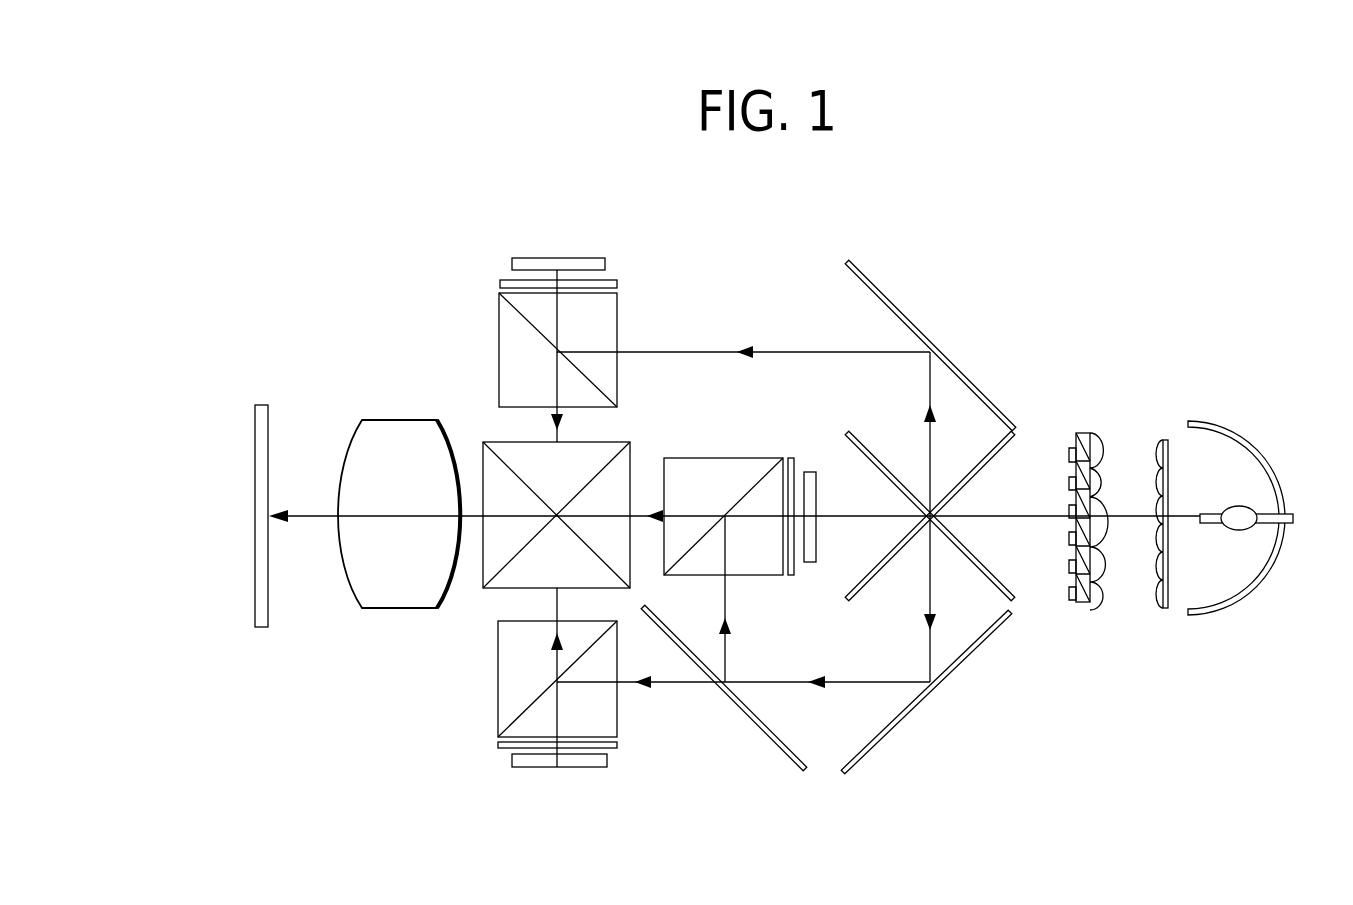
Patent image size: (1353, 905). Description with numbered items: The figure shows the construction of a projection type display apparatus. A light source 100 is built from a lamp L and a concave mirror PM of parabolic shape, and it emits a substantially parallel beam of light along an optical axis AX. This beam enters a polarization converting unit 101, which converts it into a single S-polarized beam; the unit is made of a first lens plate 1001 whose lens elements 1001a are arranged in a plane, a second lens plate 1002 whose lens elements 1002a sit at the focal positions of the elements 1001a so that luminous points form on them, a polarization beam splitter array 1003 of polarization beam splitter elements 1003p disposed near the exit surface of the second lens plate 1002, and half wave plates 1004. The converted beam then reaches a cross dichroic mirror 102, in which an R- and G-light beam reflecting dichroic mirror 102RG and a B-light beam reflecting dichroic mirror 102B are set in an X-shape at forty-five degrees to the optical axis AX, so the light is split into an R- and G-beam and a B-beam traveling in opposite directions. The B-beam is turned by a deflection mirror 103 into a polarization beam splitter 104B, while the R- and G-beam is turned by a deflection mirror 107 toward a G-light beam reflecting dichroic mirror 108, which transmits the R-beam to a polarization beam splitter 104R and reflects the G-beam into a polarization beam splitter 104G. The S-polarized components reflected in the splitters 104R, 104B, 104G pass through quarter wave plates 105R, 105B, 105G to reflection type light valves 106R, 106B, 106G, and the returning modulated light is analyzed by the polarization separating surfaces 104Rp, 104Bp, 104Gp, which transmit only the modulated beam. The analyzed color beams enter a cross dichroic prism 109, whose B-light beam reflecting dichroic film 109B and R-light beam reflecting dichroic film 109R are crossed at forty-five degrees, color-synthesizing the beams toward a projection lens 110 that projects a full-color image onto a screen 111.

The light source 100 is at (1250, 562).
The polarization converting unit 101 is at (1113, 526).
The cross dichroic mirror 102 is at (955, 484).
The B-light beam reflecting dichroic mirror 102B is at (988, 570).
The R- and G-light beam reflecting dichroic mirror 102RG is at (987, 460).
The deflection mirror 103 is at (865, 275).
The polarization beam splitter for B-light beam 104B is at (552, 349).
The polarization separating surface of B polarization beam splitter 104Bp is at (528, 325).
The polarization beam splitter for G-light beam 104G is at (730, 523).
The polarization separating surface of G polarization beam splitter 104Gp is at (750, 470).
The polarization beam splitter for R-light beam 104R is at (550, 686).
The polarization separating surface of R polarization beam splitter 104Rp is at (522, 710).
The quarter wave plate for B-light beam 105B is at (617, 287).
The quarter wave plate for G-light beam 105G is at (793, 457).
The quarter wave plate for R-light beam 105R is at (613, 750).
The reflection type light valve for B-light beam 106B is at (605, 262).
The reflection type light valve for G-light beam 106G is at (808, 563).
The reflection type light valve for R-light beam 106R is at (560, 768).
The deflection mirror 107 is at (875, 750).
The G-light beam reflecting dichroic mirror 108 is at (777, 742).
The cross dichroic prism 109 is at (548, 508).
The B-light beam reflecting dichroic film 109B is at (607, 460).
The R-light beam reflecting dichroic film 109R is at (503, 458).
The projection lens 110 is at (370, 450).
The screen 111 is at (254, 583).
The first lens plate 1001 is at (1191, 534).
The lens element of first lens plate 1001a is at (1158, 455).
The second lens plate 1002 is at (1133, 519).
The lens element of second lens plate 1002a is at (1105, 478).
The polarization beam splitter array 1003 is at (1068, 504).
The polarization beam splitter element 1003p is at (1083, 435).
The half wave plate 1004 is at (1070, 452).
The optical axis AX is at (958, 520).
The lamp L is at (1240, 532).
The concave mirror PM is at (1237, 600).